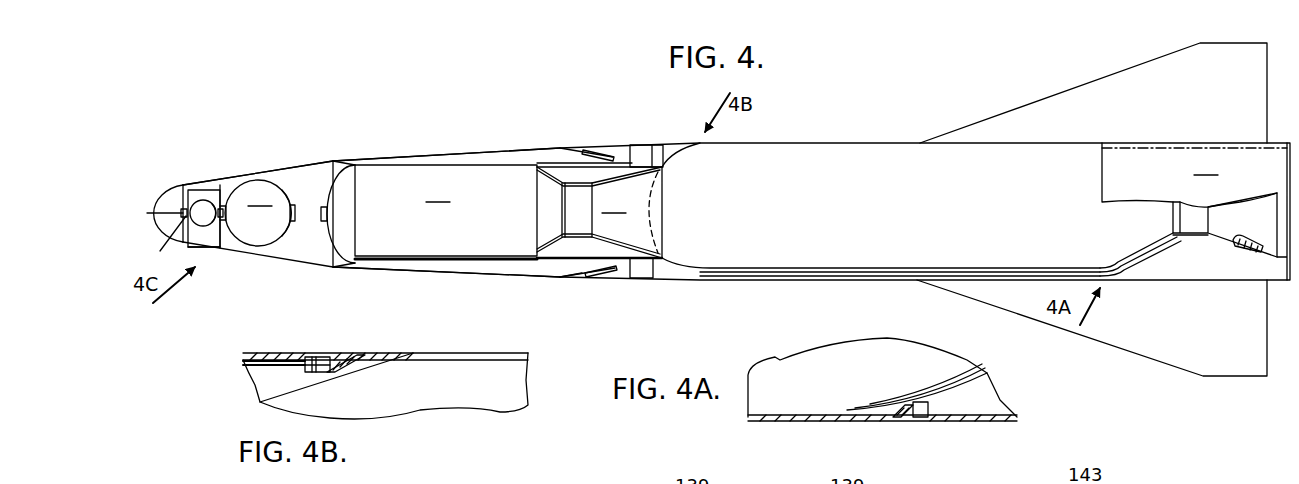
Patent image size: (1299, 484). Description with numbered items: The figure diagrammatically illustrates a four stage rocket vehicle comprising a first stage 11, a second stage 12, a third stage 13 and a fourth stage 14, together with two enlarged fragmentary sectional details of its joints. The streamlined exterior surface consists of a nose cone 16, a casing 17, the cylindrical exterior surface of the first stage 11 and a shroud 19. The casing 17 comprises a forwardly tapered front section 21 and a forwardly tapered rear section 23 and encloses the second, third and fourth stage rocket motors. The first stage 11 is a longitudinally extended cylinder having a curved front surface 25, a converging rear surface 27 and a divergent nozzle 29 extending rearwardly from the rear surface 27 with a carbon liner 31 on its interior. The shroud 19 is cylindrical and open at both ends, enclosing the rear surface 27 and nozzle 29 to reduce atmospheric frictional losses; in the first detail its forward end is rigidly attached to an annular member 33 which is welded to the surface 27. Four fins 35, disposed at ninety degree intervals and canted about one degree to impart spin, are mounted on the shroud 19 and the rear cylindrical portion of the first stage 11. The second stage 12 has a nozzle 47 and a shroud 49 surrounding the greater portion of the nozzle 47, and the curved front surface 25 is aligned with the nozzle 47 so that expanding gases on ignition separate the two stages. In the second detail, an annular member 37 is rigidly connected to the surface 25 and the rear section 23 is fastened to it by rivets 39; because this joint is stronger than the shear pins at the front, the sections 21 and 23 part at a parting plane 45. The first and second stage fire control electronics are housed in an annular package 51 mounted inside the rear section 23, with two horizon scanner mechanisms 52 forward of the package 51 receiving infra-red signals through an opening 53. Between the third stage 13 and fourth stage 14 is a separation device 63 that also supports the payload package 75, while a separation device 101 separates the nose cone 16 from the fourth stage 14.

In FIG. 4, the first stage 11 is at (782, 155).
In FIG. 4B, the first stage 11 is at (485, 395).
In FIG. 4A, the first stage 11 is at (838, 358).
In FIG. 4, the second stage 12 is at (446, 212).
In FIG. 4, the third stage 13 is at (260, 213).
In FIG. 4, the fourth stage 14 is at (200, 208).
In FIG. 4, the nose cone 16 is at (154, 193).
In FIG. 4, the casing 17 is at (404, 142).
In FIG. 4, the shroud 19 is at (1202, 281).
In FIG. 4A, the shroud 19 is at (965, 422).
In FIG. 4, the front section 21 is at (283, 163).
In FIG. 4, the rear section 23 is at (450, 152).
In FIG. 4B, the rear section 23 is at (253, 352).
In FIG. 4, the curved front surface 25 is at (667, 160).
In FIG. 4B, the curved front surface 25 is at (288, 387).
In FIG. 4, the converging rear surface 27 is at (1143, 265).
In FIG. 4A, the converging rear surface 27 is at (960, 387).
In FIG. 4, the divergent nozzle 29 is at (1223, 232).
In FIG. 4, the carbon liner 31 is at (1246, 247).
In FIG. 4A, the annular member 33 is at (893, 421).
In FIG. 4, the fins 35 is at (1098, 90).
In FIG. 4B, the annular member 37 is at (343, 360).
In FIG. 4B, the rivets 39 is at (317, 357).
In FIG. 4, the parting plane 45 is at (362, 158).
In FIG. 4, the nozzle 47 is at (599, 212).
In FIG. 4, the shroud 49 is at (555, 163).
In FIG. 4, the annular package 51 is at (640, 147).
In FIG. 4, the horizon scanner mechanisms 52 is at (611, 149).
In FIG. 4, the opening 53 is at (583, 278).
In FIG. 4, the separation device 63 is at (222, 210).
In FIG. 4, the payload package 75 is at (208, 243).
In FIG. 4, the separation device 101 is at (163, 253).